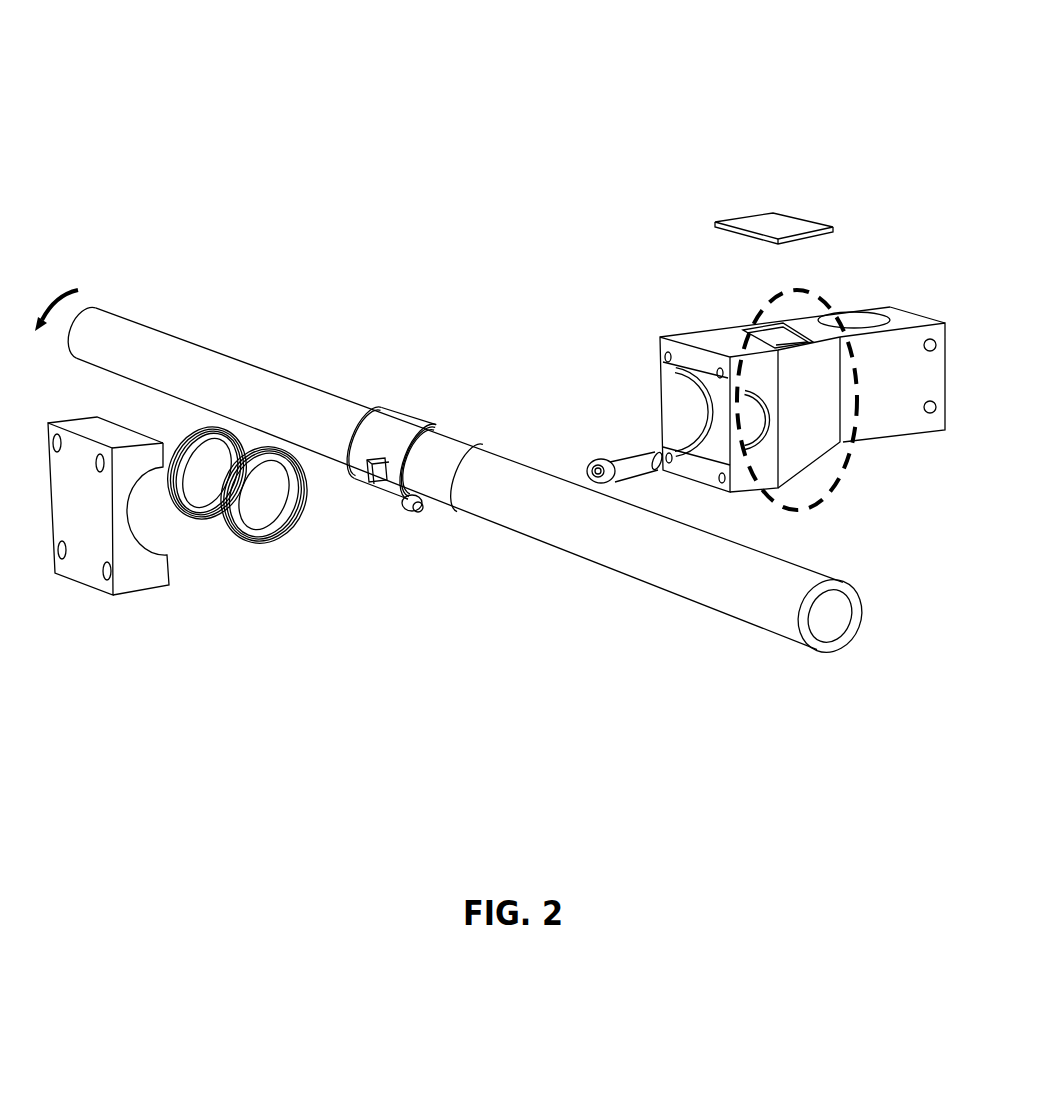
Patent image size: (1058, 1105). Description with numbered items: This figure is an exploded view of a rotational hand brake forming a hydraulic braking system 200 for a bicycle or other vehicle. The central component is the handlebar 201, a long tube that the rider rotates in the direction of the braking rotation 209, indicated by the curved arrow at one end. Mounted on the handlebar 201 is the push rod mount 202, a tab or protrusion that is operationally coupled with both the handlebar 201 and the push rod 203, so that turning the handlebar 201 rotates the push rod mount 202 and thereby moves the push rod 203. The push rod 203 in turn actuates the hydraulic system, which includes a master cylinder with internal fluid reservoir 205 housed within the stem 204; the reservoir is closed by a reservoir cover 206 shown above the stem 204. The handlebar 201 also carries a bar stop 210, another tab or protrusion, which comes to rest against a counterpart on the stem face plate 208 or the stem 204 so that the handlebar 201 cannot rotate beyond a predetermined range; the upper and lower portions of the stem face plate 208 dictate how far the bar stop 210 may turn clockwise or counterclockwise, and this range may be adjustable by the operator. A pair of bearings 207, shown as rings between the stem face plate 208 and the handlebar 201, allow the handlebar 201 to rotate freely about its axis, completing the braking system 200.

The braking system 200 is at (772, 80).
The handlebar 201 is at (852, 635).
The push rod mount 202 is at (423, 508).
The push rod 203 is at (638, 463).
The stem 204 is at (897, 432).
The master cylinder with internal fluid reservoir 205 is at (742, 327).
The reservoir cover 206 is at (768, 212).
The bearings 207 is at (283, 537).
The stem face plate 208 is at (149, 590).
The braking rotation 209 is at (54, 295).
The bar stop 210 is at (380, 448).